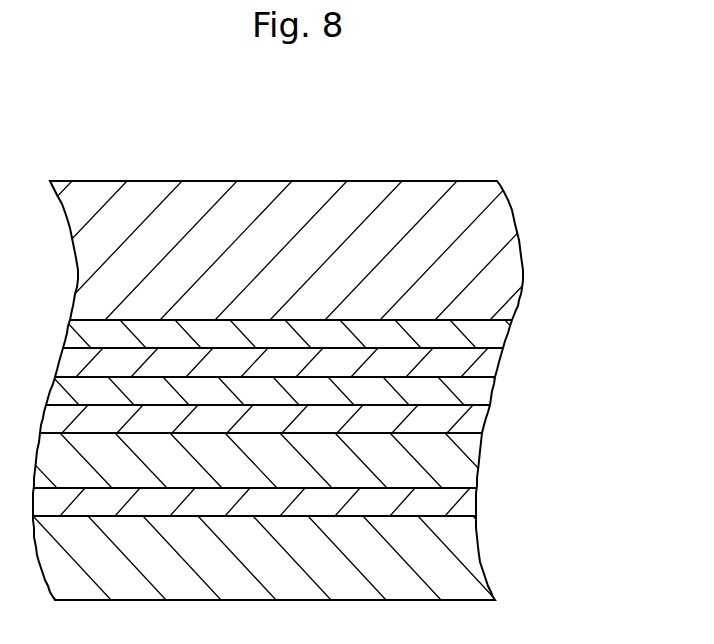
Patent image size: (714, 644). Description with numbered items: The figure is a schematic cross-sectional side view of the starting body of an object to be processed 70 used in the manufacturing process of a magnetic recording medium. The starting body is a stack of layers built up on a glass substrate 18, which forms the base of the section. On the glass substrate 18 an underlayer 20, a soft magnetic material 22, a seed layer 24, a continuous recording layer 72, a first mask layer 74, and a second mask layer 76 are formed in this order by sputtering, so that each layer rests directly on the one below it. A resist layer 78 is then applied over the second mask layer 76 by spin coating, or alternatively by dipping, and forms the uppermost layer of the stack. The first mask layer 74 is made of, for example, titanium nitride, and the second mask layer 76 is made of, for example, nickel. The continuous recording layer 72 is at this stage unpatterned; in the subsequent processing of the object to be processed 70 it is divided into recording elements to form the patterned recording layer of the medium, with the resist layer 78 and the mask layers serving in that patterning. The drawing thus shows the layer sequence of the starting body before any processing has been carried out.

The object to be processed 70 is at (310, 164).
The resist layer 78 is at (518, 232).
The second mask layer 76 is at (513, 333).
The first mask layer 74 is at (505, 363).
The continuous recording layer 72 is at (493, 393).
The seed layer 24 is at (487, 420).
The soft magnetic material 22 is at (478, 458).
The underlayer 20 is at (476, 505).
The glass substrate 18 is at (482, 547).